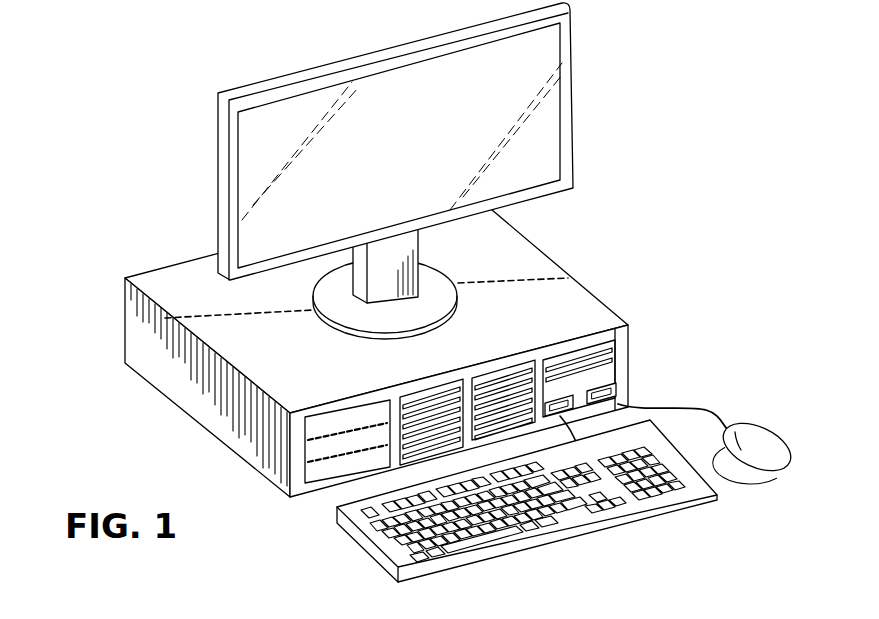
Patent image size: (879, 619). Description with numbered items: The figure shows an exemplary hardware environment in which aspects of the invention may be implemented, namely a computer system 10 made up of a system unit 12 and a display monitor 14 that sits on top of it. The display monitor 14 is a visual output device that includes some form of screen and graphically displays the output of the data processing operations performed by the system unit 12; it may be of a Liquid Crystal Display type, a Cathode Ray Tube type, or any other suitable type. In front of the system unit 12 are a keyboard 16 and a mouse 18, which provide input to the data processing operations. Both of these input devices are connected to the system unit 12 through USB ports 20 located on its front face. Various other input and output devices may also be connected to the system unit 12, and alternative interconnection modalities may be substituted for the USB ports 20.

The computer system 10 is at (112, 133).
The system unit 12 is at (322, 371).
The display monitor 14 is at (418, 155).
The keyboard 16 is at (652, 509).
The mouse 18 is at (777, 438).
The USB ports 20 is at (566, 400).